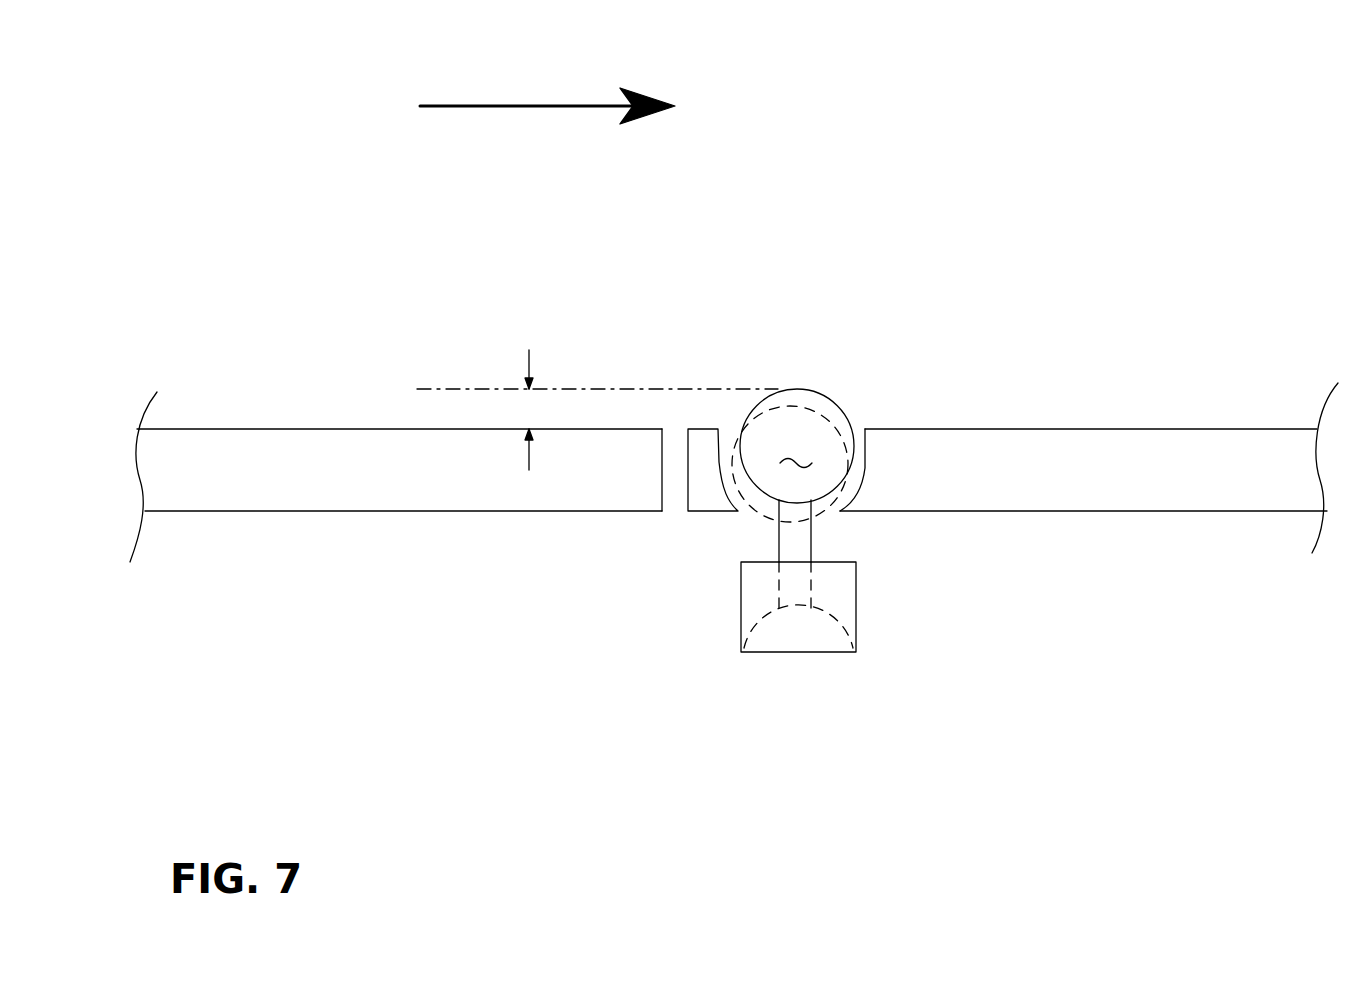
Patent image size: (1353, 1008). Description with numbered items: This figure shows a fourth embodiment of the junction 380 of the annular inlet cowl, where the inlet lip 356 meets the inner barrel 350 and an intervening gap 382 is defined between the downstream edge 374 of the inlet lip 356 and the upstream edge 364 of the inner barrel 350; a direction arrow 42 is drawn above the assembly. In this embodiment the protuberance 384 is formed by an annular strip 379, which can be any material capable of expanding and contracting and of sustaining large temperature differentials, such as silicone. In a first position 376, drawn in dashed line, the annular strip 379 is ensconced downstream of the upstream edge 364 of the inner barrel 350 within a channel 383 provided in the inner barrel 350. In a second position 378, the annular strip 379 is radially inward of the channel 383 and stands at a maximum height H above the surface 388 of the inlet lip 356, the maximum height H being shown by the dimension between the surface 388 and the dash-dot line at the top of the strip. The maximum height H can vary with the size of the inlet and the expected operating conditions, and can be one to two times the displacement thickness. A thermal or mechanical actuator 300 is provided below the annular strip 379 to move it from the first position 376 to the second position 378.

The direction of travel arrow 42 is at (547, 105).
The maximum height H is at (531, 410).
The surface of the inlet lip 388 is at (407, 429).
The inlet lip 356 is at (386, 482).
The inner barrel 350 is at (1068, 460).
The downstream edge of the inlet lip 374 is at (663, 448).
The junction 380 is at (703, 420).
The intervening gap 382 is at (683, 471).
The upstream edge of the inner barrel 364 is at (683, 500).
The second position 378 is at (784, 389).
The protuberance 384 is at (805, 400).
The first position 376 is at (835, 392).
The channel 383 is at (862, 427).
The annular strip 379 is at (798, 449).
The thermal or mechanical actuator 300 is at (823, 635).